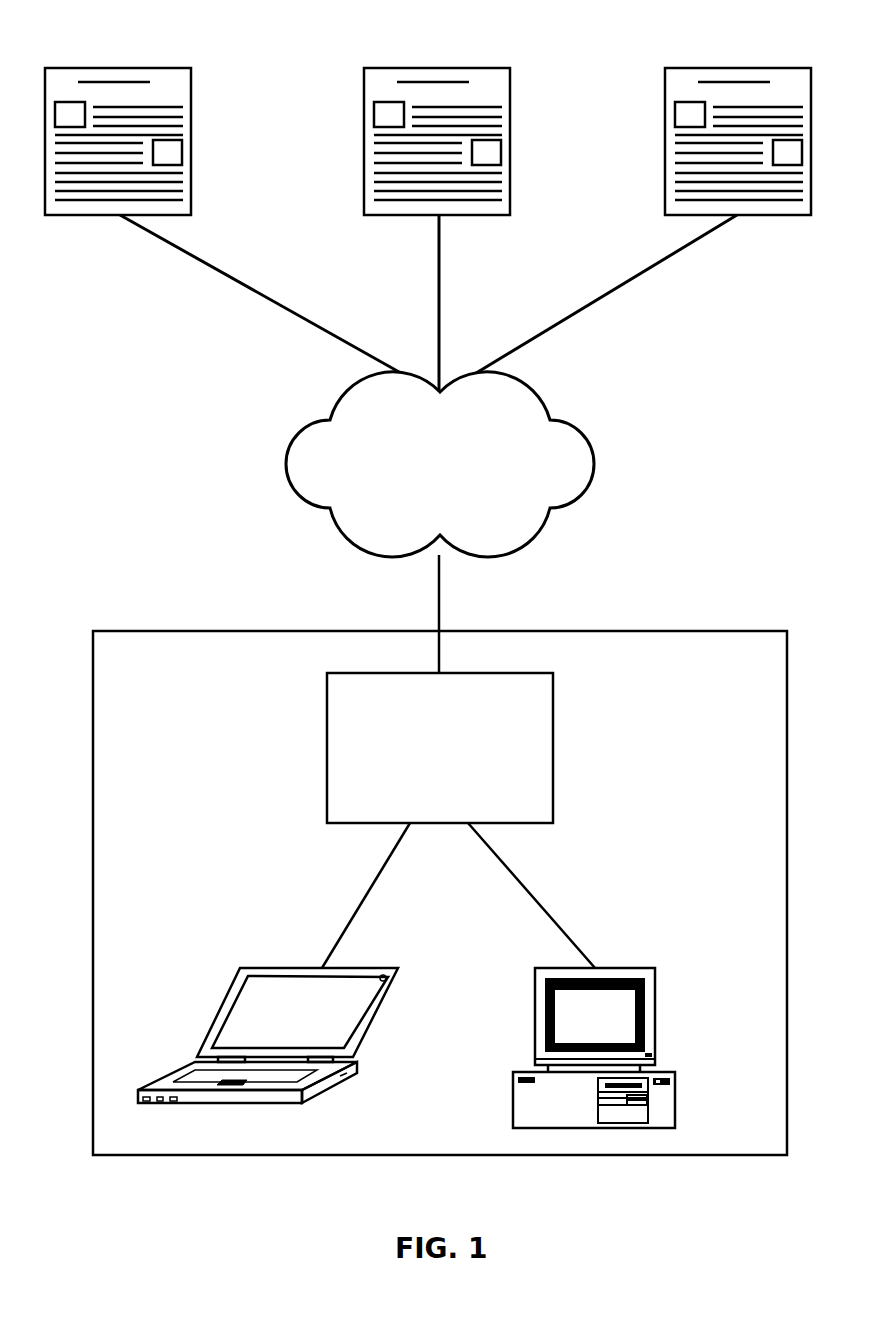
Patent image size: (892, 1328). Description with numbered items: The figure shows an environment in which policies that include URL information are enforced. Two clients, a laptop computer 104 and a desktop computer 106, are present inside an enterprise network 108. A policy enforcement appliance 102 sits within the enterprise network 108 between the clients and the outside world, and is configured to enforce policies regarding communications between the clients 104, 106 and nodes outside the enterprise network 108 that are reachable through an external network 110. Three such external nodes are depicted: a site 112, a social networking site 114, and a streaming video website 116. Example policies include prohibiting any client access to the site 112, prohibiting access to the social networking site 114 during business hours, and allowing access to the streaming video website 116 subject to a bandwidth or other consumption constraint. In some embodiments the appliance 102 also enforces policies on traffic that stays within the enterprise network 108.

The policy enforcement appliance 102 is at (553, 727).
The laptop computer client 104 is at (363, 968).
The desktop computer client 106 is at (655, 1007).
The enterprise network 108 is at (702, 631).
The external network 110 is at (593, 460).
The site 112 is at (120, 68).
The social networking site 114 is at (437, 68).
The streaming video website 116 is at (737, 68).